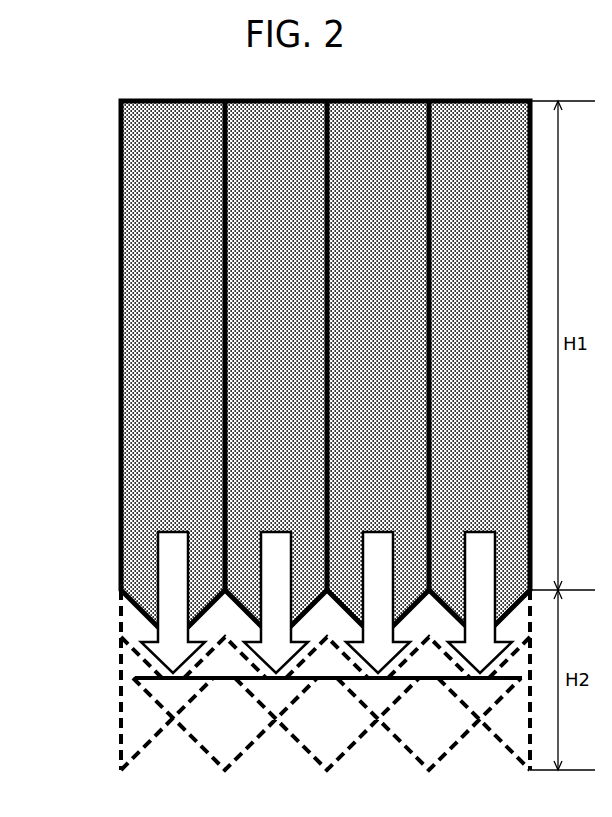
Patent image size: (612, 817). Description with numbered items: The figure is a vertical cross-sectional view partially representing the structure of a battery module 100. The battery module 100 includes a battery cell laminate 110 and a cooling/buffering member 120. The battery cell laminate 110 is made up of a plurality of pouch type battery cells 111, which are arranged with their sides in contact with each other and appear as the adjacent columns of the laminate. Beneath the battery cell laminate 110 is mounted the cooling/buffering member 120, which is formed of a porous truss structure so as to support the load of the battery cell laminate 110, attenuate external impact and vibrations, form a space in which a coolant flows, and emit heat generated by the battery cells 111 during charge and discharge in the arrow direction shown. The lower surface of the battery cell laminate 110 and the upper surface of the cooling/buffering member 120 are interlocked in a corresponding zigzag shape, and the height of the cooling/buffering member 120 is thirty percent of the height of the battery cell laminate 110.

The battery module 100 is at (90, 147).
The battery cell laminate 110 is at (276, 371).
The pouch type battery cell 111 is at (153, 493).
The cooling/buffering member 120 is at (112, 672).